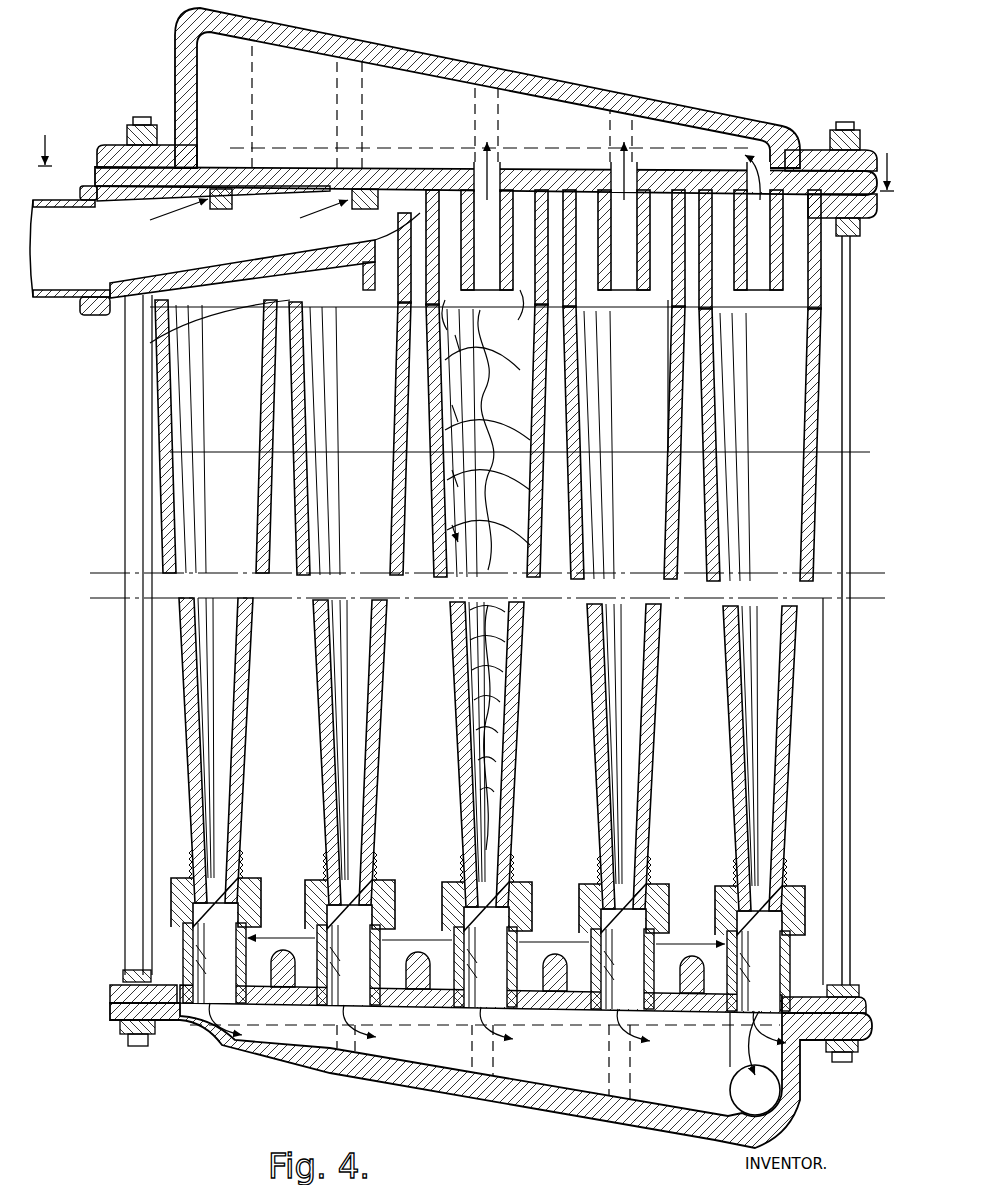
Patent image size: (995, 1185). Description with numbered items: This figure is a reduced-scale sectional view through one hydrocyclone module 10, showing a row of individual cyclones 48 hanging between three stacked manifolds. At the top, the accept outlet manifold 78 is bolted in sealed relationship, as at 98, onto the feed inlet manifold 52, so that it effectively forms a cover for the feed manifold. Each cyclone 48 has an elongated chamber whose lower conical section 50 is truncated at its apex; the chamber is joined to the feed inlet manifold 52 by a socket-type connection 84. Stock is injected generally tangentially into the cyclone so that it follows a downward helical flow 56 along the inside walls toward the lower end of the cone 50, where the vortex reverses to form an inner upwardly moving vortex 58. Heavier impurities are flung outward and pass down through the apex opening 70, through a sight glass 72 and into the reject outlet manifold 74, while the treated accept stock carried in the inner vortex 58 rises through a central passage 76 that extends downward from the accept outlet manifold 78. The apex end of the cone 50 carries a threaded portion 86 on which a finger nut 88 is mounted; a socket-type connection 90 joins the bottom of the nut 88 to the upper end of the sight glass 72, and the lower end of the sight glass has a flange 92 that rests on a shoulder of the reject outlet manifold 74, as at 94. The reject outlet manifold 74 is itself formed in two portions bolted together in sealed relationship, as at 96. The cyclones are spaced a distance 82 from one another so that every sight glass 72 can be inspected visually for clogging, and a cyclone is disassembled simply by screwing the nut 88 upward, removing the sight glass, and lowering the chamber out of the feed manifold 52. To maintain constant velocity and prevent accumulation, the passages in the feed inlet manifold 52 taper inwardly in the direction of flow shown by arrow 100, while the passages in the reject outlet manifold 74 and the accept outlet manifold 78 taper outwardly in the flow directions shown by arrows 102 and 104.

The hydrocyclone module 10 is at (754, 112).
The cyclone 48 is at (314, 759).
The lower conical section 50 is at (453, 675).
The feed inlet manifold 52 is at (115, 268).
The helical flow 56 is at (494, 414).
The inner upwardly moving vortex 58 is at (502, 552).
The apex opening 70 is at (466, 897).
The sight glass 72 is at (178, 941).
The reject outlet manifold 74 is at (395, 1045).
The central passage 76 is at (478, 385).
The accept outlet manifold 78 is at (433, 93).
The spacing distance between cyclones 82 is at (265, 937).
The socket-type connection 84 is at (478, 345).
The threaded portion 86 is at (330, 862).
The finger nut 88 is at (519, 890).
The socket-type connection 90 is at (449, 942).
The flange 92 is at (437, 1004).
The shoulder seat 94 is at (432, 1003).
The bolted sealed joint 96 is at (110, 1010).
The bolted sealed joint 98 is at (861, 158).
The feed flow direction arrow 100 is at (142, 236).
The reject flow direction arrow 102 is at (578, 1062).
The accept flow direction arrow 104 is at (377, 108).